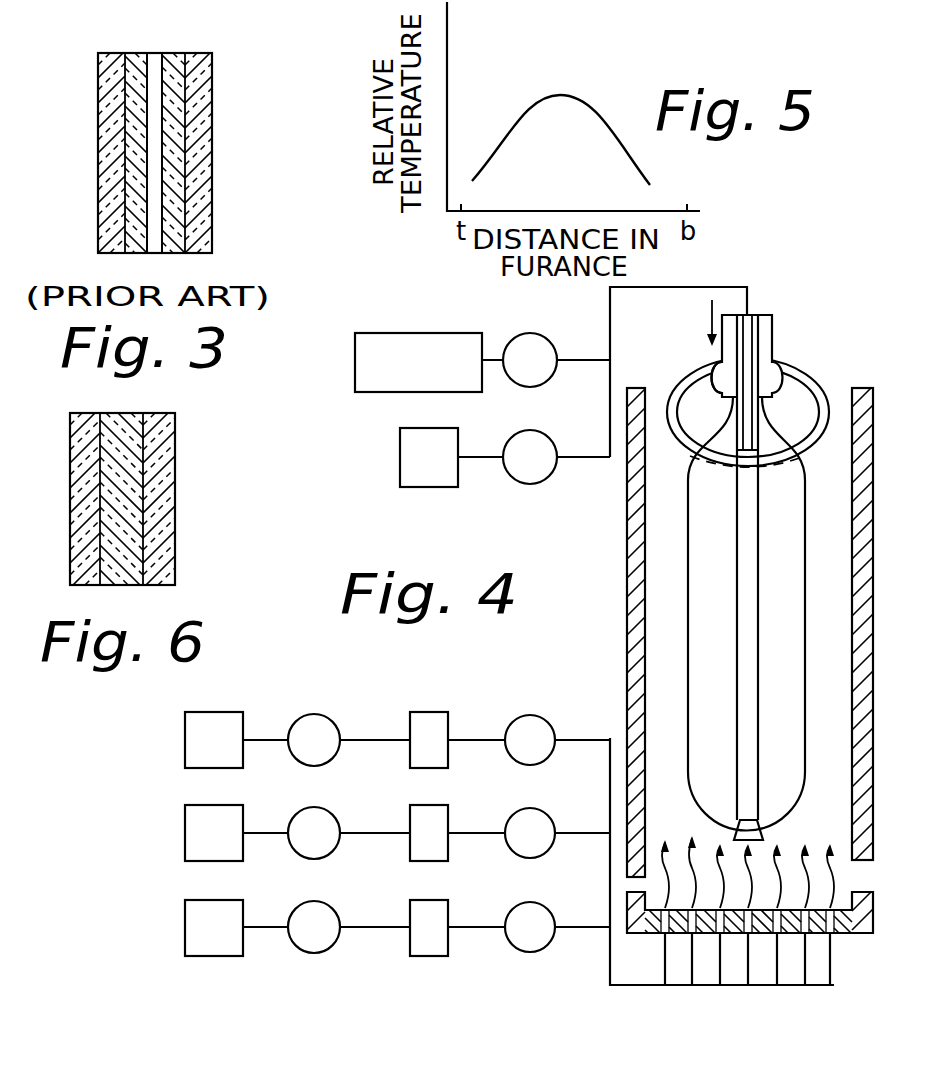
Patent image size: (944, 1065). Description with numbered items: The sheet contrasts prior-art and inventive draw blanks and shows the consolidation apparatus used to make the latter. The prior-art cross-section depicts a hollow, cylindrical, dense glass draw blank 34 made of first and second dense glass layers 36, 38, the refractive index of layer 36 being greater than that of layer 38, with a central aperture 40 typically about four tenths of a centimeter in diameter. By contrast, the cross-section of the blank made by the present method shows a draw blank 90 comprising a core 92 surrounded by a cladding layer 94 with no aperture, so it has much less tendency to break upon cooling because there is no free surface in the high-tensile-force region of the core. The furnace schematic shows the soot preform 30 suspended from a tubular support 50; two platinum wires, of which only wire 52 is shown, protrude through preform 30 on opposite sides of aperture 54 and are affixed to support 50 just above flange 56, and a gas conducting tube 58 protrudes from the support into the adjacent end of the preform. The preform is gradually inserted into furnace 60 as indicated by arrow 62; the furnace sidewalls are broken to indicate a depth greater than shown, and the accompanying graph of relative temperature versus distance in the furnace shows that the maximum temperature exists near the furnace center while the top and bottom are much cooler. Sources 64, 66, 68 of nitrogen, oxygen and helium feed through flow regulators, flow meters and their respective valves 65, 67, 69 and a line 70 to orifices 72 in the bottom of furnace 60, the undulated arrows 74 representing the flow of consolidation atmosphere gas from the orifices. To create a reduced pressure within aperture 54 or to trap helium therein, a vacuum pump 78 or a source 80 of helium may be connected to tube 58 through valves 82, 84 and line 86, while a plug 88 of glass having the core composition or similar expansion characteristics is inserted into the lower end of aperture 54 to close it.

In FIG. 3, the draw blank 34 is at (212, 68).
In FIG. 3, the first dense glass layer 36 is at (175, 53).
In FIG. 3, the second dense glass layer 38 is at (200, 144).
In FIG. 3, the aperture 40 is at (152, 58).
In FIG. 6, the draw blank 90 is at (175, 441).
In FIG. 6, the core 92 is at (122, 416).
In FIG. 6, the cladding layer 94 is at (166, 505).
In FIG. 4, the preform 30 is at (804, 648).
In FIG. 4, the tubular support 50 is at (776, 340).
In FIG. 4, the platinum wire 52 is at (811, 378).
In FIG. 4, the aperture 54 is at (741, 615).
In FIG. 4, the flange 56 is at (722, 371).
In FIG. 4, the gas conducting tube 58 is at (759, 400).
In FIG. 4, the furnace 60 is at (870, 607).
In FIG. 4, the arrow 62 is at (708, 312).
In FIG. 4, the source of nitrogen 64 is at (185, 740).
In FIG. 4, the valve 65 is at (533, 715).
In FIG. 4, the source of oxygen 66 is at (185, 833).
In FIG. 4, the valve 67 is at (532, 808).
In FIG. 4, the source of helium 68 is at (185, 927).
In FIG. 4, the valve 69 is at (528, 902).
In FIG. 4, the line 70 is at (610, 986).
In FIG. 4, the orifices 72 is at (831, 911).
In FIG. 4, the undulated arrows 74 is at (803, 870).
In FIG. 4, the vacuum pump 78 is at (401, 333).
In FIG. 4, the source of helium 80 is at (400, 457).
In FIG. 4, the valve 82 is at (537, 334).
In FIG. 4, the valve 84 is at (548, 436).
In FIG. 4, the line 86 is at (636, 290).
In FIG. 4, the plug 88 is at (736, 833).